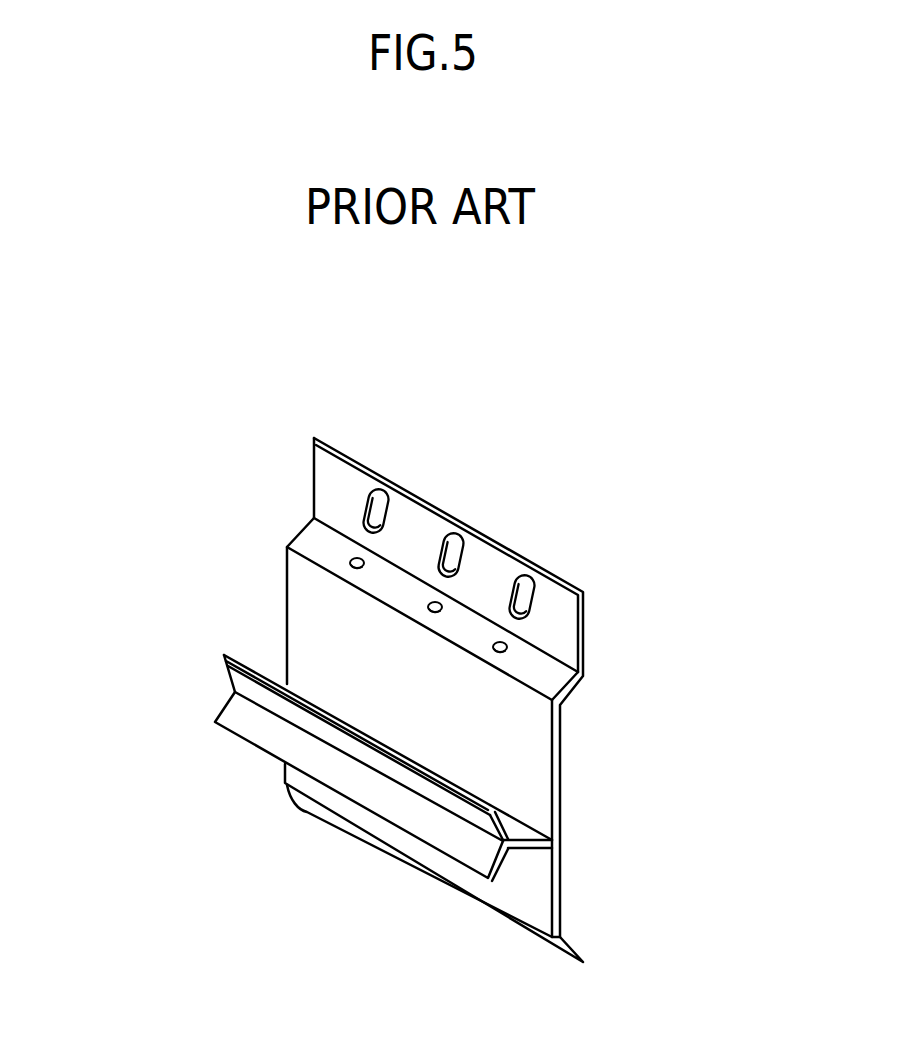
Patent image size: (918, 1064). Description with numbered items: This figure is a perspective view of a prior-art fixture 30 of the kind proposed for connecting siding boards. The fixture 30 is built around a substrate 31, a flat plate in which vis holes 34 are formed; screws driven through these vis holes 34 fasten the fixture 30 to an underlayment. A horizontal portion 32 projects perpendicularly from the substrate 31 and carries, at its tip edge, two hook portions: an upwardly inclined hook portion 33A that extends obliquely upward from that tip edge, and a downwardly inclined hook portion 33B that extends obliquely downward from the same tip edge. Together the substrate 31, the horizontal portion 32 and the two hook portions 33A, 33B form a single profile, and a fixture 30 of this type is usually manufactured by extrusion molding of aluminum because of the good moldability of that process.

The fixture 30 is at (699, 506).
The substrate 31 is at (527, 758).
The horizontal portion 32 is at (520, 835).
The upwardly inclined hook portion 33A is at (235, 684).
The downwardly inclined hook portion 33B is at (247, 723).
The vis holes 34 is at (446, 552).